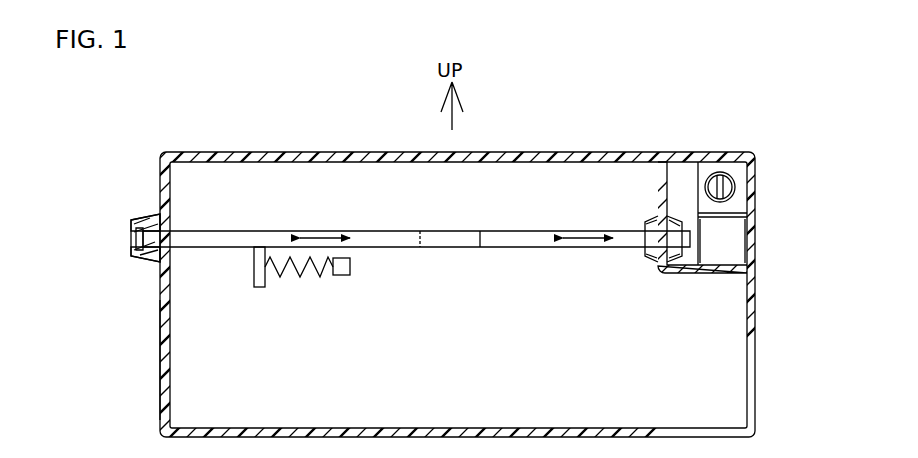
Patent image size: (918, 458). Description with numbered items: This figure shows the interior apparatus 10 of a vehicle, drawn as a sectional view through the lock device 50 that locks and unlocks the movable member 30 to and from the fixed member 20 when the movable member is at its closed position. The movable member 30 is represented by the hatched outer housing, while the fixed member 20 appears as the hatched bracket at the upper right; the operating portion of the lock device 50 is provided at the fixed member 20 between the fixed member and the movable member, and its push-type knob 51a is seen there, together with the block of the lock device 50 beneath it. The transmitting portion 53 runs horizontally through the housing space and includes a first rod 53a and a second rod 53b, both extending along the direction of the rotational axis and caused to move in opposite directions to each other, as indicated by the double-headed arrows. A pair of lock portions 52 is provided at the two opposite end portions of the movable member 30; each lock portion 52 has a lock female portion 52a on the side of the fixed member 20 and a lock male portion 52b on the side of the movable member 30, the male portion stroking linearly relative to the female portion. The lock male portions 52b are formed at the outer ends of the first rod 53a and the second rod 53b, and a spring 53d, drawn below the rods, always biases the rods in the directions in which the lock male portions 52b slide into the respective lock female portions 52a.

The interior apparatus 10 is at (281, 150).
The fixed member 20 is at (687, 158).
The movable member 30 is at (160, 383).
The lock device 50 is at (732, 244).
The push-type knob 51a is at (732, 230).
The lock portion 52 is at (78, 200).
The lock female portion 52a is at (134, 228).
The lock male portion 52b is at (133, 248).
The transmitting portion 53 is at (531, 243).
The first rod 53a is at (548, 240).
The second rod 53b is at (290, 238).
The spring 53d is at (296, 274).